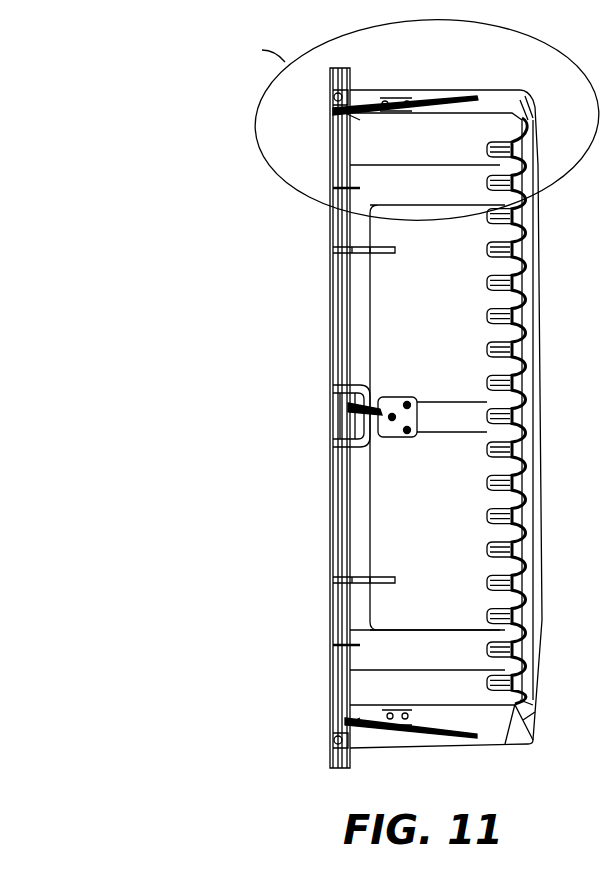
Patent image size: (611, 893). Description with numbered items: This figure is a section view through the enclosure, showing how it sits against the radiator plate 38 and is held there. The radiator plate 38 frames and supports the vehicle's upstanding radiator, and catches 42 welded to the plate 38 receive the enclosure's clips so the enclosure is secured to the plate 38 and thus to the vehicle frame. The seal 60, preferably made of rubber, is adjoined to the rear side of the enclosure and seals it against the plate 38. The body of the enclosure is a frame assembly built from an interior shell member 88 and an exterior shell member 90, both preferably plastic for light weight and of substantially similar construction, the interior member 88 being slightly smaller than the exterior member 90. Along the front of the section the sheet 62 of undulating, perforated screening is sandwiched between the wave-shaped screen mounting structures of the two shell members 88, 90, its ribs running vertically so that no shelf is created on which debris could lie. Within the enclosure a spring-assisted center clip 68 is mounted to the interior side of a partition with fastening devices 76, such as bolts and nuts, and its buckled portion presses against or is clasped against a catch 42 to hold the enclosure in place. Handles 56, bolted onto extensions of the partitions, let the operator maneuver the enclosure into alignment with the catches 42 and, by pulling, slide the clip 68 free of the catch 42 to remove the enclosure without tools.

The radiator plate 38 is at (330, 312).
The catches 42 is at (338, 113).
The handles 56 is at (480, 88).
The seal 60 is at (345, 56).
The sheet of undulating screening 62 is at (538, 298).
The center clip 68 is at (393, 437).
The fastening devices 76 is at (388, 416).
The interior shell member 88 is at (535, 258).
The exterior shell member 90 is at (488, 352).